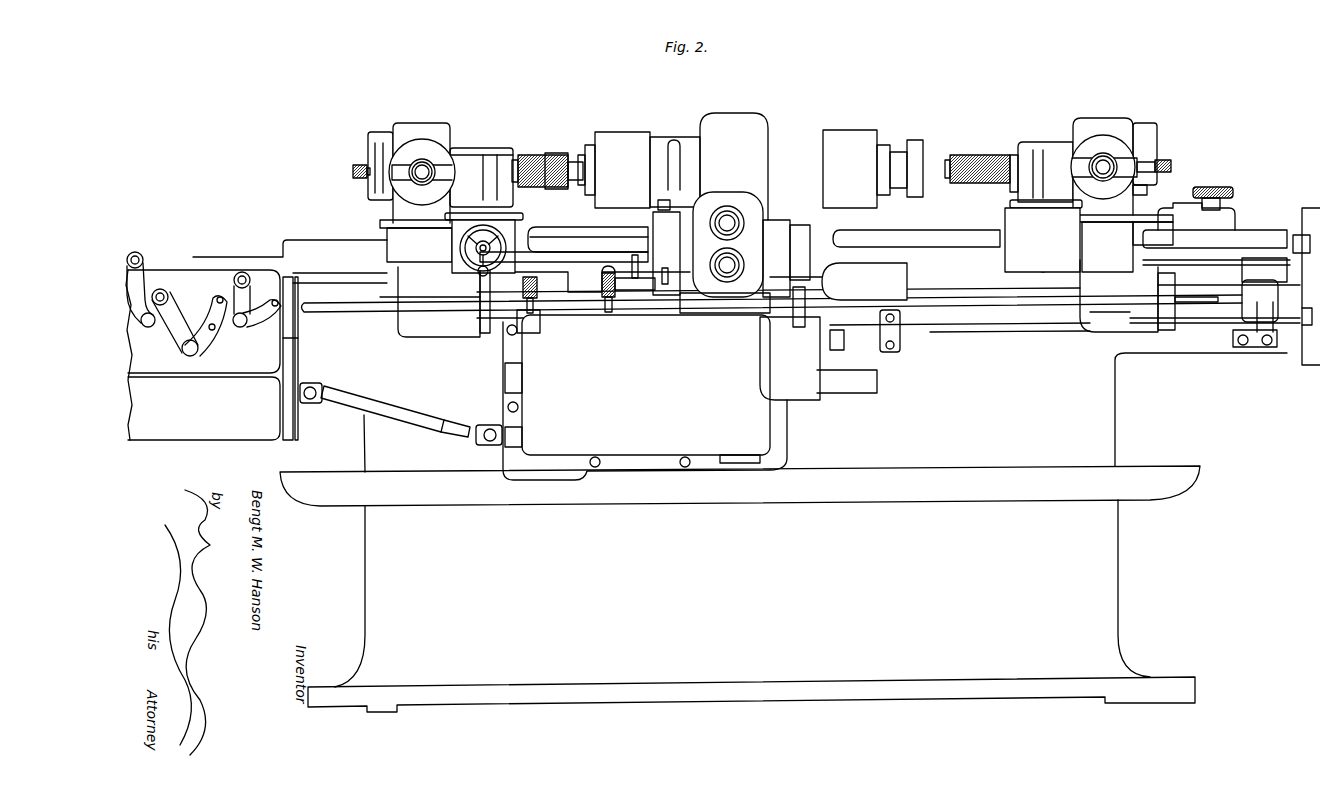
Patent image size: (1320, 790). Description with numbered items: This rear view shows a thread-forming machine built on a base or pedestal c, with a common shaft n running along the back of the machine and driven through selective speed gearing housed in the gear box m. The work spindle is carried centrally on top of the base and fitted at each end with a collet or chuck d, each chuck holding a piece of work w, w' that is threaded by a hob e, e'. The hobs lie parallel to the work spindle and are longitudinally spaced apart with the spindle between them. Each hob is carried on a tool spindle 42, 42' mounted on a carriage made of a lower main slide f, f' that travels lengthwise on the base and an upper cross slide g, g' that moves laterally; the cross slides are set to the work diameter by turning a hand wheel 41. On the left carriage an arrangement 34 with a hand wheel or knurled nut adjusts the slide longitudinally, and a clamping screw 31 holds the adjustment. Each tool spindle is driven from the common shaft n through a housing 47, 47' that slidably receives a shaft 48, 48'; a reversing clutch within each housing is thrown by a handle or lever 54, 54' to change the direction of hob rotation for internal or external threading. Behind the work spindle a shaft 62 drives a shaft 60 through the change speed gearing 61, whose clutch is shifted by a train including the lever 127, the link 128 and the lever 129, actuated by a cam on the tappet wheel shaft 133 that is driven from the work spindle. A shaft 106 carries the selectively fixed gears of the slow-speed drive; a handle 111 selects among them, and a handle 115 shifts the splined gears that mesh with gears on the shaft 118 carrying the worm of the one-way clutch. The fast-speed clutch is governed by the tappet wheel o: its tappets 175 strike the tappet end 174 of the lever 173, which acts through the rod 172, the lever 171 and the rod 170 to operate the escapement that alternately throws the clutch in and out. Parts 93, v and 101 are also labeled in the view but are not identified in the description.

The base or pedestal c is at (790, 486).
The common shaft n is at (350, 313).
The gear box m is at (212, 346).
The main slide f' is at (290, 236).
The connecting rod 93 is at (350, 412).
The shaft 118 is at (486, 443).
The housing 47' is at (440, 177).
The shaft 48' is at (388, 191).
The handle or lever 54' is at (343, 166).
The cross slide g' is at (478, 269).
The hand wheel 41 is at (470, 266).
The hob e' is at (540, 158).
The piece of work w' is at (556, 158).
The tool spindle 42' is at (544, 142).
The collet or chuck d is at (614, 138).
The headstock v is at (777, 136).
The piece of work w is at (914, 154).
The hob e is at (977, 155).
The tool spindle 42 is at (1013, 149).
The housing 47 is at (1095, 181).
The shaft 48 is at (1080, 175).
The handle or lever 54 is at (1173, 153).
The cross slide g is at (1070, 265).
The adjustable connection arrangement 34 is at (1215, 187).
The clamping screw 31 is at (1232, 212).
The main slide f is at (1215, 218).
The tappets 175 is at (1293, 238).
The tappet wheel o is at (1312, 322).
The tappet end of lever 174 is at (1290, 273).
The lever 173 is at (1307, 327).
The lever 129 is at (675, 257).
The tappet wheel shaft 133 is at (862, 282).
The handle 115 is at (533, 280).
The change speed gearing 61 is at (729, 197).
The shaft 60 is at (738, 216).
The shaft 62 is at (725, 273).
The shaft 106 is at (521, 377).
The bolt 101 is at (597, 293).
The lever 127 is at (653, 290).
The link 128 is at (665, 285).
The handle 111 is at (835, 318).
The rod 170 is at (830, 345).
The lever 171 is at (820, 340).
The rod 172 is at (982, 328).